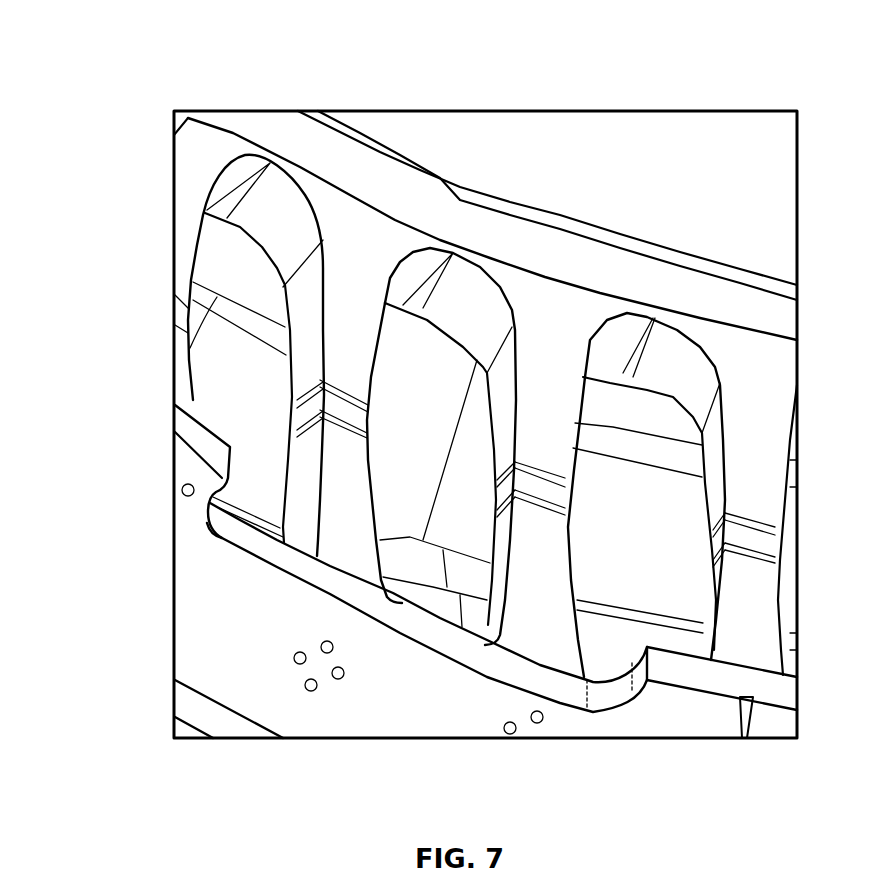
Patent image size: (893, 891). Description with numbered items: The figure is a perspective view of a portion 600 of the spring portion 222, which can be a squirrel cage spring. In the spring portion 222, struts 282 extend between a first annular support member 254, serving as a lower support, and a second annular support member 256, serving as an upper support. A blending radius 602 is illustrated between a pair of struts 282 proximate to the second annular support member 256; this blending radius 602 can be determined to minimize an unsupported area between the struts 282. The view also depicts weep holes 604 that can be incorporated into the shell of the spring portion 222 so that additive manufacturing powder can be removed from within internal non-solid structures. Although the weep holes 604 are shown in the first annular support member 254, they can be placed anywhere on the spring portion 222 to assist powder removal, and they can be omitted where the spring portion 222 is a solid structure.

The portion of the spring portion 600 is at (103, 54).
The spring portion 222 is at (190, 188).
The second annular support member 256 is at (705, 290).
The struts 282 is at (367, 290).
The blending radius 602 is at (487, 320).
The first annular support member 254 is at (192, 593).
The weep holes 604 is at (174, 494).